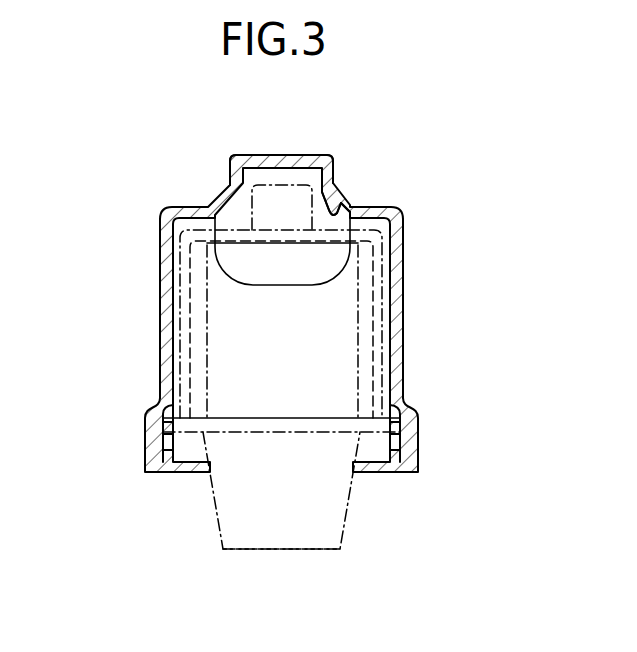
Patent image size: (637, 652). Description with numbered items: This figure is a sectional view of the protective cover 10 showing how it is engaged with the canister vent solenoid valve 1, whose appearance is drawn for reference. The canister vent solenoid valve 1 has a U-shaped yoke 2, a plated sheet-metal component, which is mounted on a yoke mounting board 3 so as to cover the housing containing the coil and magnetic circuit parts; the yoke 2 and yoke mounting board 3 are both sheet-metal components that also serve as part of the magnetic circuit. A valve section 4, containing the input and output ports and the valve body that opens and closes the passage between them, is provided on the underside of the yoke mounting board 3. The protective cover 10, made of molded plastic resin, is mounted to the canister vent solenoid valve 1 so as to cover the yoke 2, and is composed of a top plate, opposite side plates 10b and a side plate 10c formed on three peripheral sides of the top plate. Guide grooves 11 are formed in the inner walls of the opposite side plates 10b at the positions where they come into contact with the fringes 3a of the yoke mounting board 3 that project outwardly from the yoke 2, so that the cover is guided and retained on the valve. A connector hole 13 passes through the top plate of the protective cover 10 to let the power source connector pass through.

The canister vent solenoid valve 1 is at (248, 550).
The yoke 2 is at (383, 240).
The yoke mounting board 3 is at (262, 415).
The fringes of the yoke mounting board 3a is at (395, 433).
The valve section 4 is at (328, 515).
The protective cover 10 is at (222, 196).
The opposite side plates 10b is at (160, 253).
The side plate 10c is at (262, 155).
The guide grooves 11 is at (172, 406).
The connector hole 13 is at (337, 207).